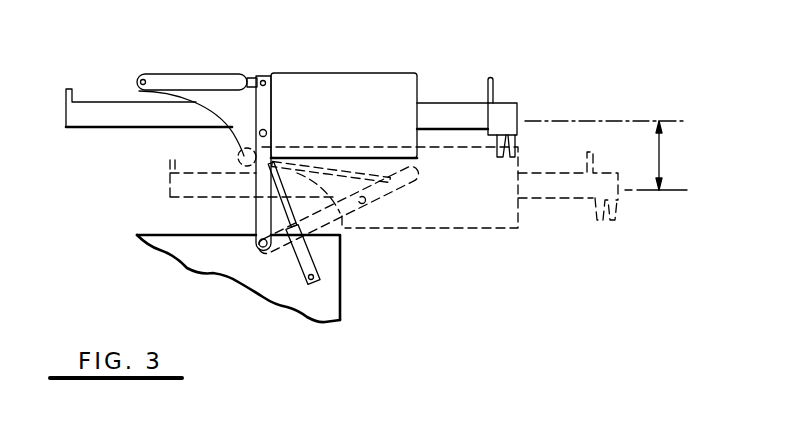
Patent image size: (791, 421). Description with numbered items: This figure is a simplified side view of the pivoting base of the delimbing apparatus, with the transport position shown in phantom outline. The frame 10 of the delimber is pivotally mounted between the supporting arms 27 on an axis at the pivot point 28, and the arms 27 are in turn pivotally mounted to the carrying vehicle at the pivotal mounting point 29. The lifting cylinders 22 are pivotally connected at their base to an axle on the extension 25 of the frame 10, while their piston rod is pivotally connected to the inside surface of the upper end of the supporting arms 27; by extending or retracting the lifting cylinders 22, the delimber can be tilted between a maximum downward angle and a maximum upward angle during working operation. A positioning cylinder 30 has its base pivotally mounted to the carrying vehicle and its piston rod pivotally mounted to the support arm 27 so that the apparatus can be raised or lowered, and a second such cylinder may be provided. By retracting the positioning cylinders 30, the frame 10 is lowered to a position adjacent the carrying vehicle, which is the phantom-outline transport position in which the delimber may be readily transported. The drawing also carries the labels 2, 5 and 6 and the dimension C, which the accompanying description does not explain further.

The base / support member 2 is at (162, 233).
The beam arm 5 is at (116, 113).
The end block 6 is at (502, 117).
The frame 10 is at (372, 92).
The lifting cylinders 22 is at (197, 82).
The extension 25 is at (140, 78).
The supporting arms 27 is at (264, 112).
The pivot point 28 is at (268, 133).
The pivotal mounting point 29 is at (257, 243).
The positioning cylinders 30 is at (295, 250).
The dimension C is at (661, 165).